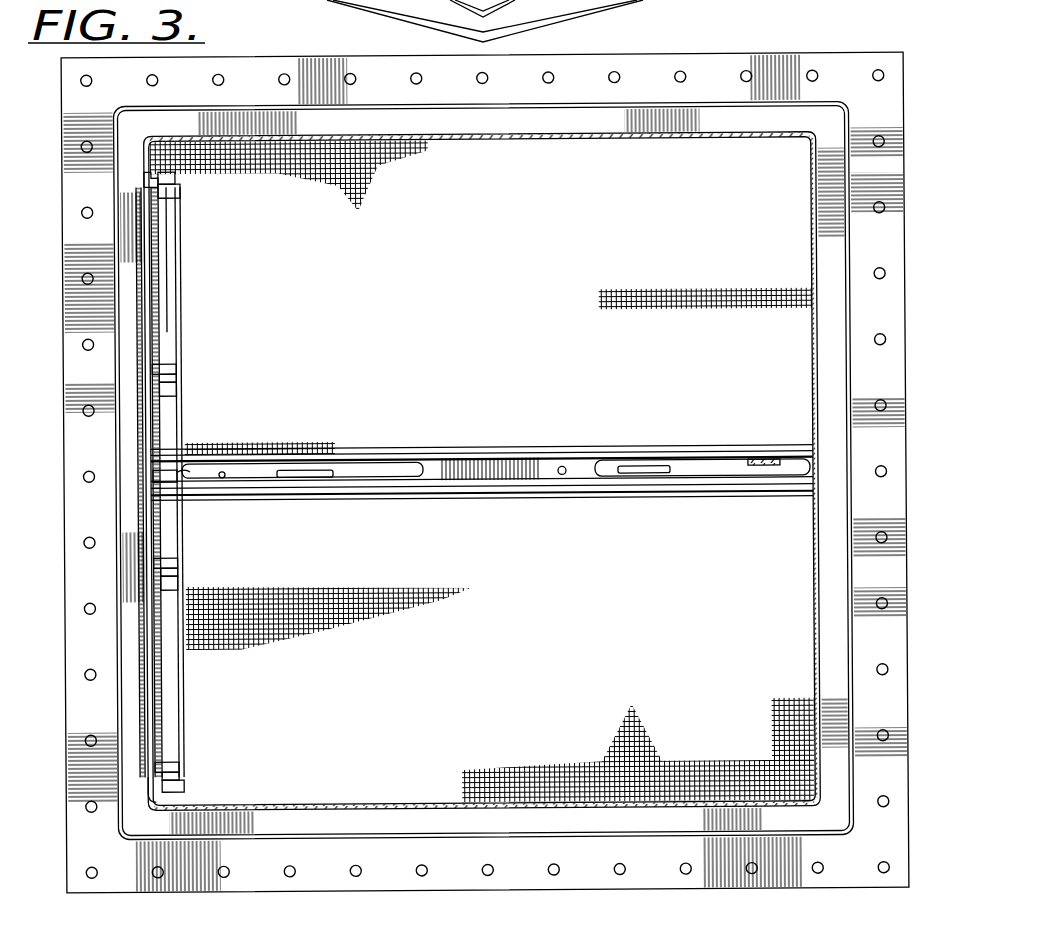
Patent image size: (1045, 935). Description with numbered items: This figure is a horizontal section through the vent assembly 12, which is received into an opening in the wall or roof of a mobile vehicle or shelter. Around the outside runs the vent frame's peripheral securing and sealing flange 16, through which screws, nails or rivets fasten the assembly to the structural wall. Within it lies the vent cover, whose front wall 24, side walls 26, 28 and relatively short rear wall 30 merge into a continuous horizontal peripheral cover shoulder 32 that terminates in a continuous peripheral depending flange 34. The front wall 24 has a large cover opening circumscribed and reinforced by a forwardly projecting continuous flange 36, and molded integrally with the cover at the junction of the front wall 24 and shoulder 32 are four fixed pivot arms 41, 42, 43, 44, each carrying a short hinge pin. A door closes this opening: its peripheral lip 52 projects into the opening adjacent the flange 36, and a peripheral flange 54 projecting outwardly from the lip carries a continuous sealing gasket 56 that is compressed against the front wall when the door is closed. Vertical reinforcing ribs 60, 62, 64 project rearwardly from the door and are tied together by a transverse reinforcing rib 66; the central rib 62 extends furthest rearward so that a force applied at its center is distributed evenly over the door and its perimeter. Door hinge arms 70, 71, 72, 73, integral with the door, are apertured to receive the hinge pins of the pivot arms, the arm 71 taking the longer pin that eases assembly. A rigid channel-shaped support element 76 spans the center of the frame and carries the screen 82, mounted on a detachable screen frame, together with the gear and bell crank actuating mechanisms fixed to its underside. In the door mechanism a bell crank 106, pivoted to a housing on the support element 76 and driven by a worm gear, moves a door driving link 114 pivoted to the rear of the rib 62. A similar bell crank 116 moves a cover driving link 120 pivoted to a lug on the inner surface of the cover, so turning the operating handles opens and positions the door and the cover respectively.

The vent assembly 12 is at (825, 32).
The peripheral securing and sealing flange 16 is at (716, 60).
The front wall 24 is at (446, 460).
The side wall 26 is at (333, 804).
The side wall 28 is at (573, 141).
The rear wall 30 is at (816, 401).
The peripheral cover shoulder 32 is at (524, 110).
The peripheral depending flange 34 is at (203, 102).
The opening flange 36 is at (148, 176).
The fixed pivot arm 41 is at (183, 788).
The fixed pivot arm 42 is at (177, 581).
The fixed pivot arm 43 is at (178, 386).
The fixed pivot arm 44 is at (185, 193).
The peripheral lip 52 is at (141, 366).
The peripheral flange 54 is at (178, 763).
The sealing gasket 56 is at (158, 788).
The reinforcing rib 60 is at (173, 362).
The reinforcing rib 62 is at (178, 468).
The reinforcing rib 64 is at (177, 558).
The transverse reinforcing rib 66 is at (177, 320).
The door hinge arm 70 is at (173, 765).
The door hinge arm 71 is at (177, 559).
The door hinge arm 72 is at (179, 365).
The door hinge arm 73 is at (182, 179).
The support element 76 is at (482, 473).
The screen 82 is at (614, 342).
The bell crank 106 is at (308, 494).
The door driving link 114 is at (388, 464).
The bell crank 116 is at (703, 473).
The cover driving link 120 is at (768, 462).